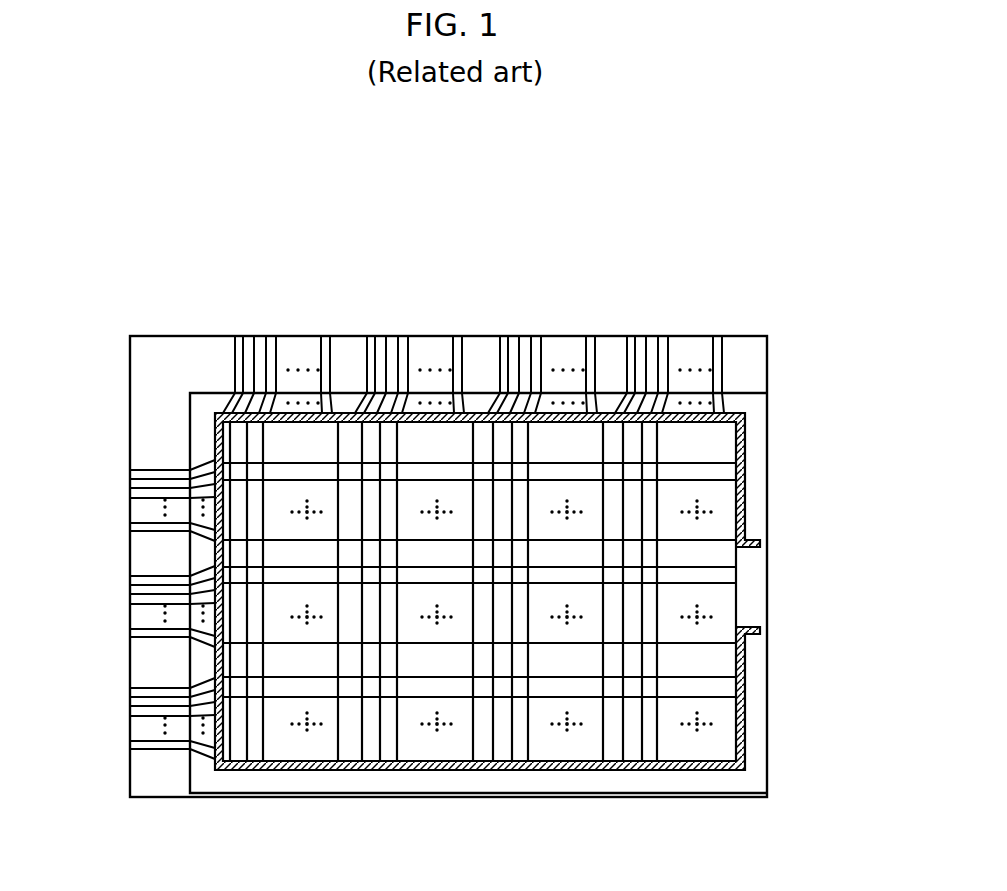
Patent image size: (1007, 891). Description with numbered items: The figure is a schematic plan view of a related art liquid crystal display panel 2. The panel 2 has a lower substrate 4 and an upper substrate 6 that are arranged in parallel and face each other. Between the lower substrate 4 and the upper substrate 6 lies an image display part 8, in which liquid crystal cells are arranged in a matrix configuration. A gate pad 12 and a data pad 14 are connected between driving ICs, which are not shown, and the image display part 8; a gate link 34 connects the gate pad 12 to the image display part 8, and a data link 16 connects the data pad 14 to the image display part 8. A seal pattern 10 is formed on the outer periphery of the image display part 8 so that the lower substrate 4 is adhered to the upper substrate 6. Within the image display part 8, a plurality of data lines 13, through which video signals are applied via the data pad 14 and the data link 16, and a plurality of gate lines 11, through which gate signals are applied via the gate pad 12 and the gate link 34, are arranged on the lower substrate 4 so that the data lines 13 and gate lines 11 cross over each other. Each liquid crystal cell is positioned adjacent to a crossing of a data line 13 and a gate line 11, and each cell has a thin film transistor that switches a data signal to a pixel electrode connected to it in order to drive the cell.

The liquid crystal display panel 2 is at (238, 314).
The lower substrate 4 is at (770, 364).
The upper substrate 6 is at (752, 413).
The image display part 8 is at (632, 740).
The seal pattern 10 is at (748, 526).
The gate lines 11 is at (434, 514).
The gate pad 12 is at (130, 470).
The data lines 13 is at (268, 453).
The data pad 14 is at (330, 335).
The data link 16 is at (190, 417).
The gate link 34 is at (203, 750).